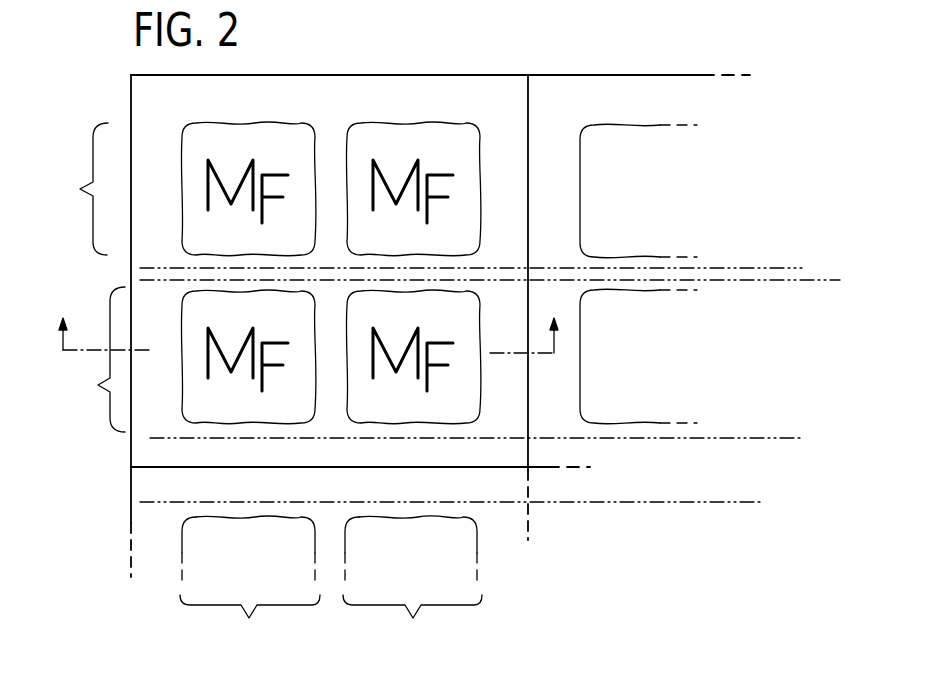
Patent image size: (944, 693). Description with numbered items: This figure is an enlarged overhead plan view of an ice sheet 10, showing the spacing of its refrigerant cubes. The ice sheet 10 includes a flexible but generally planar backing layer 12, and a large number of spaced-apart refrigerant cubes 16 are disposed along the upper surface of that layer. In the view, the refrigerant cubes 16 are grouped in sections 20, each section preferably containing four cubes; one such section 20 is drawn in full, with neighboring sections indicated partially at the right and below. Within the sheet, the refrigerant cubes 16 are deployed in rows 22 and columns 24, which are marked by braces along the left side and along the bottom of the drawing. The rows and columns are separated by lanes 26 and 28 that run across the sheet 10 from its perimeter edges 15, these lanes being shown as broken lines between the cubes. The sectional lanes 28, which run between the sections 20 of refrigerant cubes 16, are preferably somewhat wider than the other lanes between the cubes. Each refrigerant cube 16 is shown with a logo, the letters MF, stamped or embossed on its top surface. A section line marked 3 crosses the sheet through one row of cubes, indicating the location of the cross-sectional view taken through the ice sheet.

The ice sheet 10 is at (98, 488).
The backing layer 12 is at (580, 75).
The perimeter edges 15 is at (337, 75).
The refrigerant cubes 16 is at (274, 123).
The sections 20 is at (131, 108).
The rows 22 is at (86, 277).
The columns 24 is at (331, 620).
The lanes 26 is at (328, 145).
The sectional lanes 28 is at (566, 188).
The section line 3- 3 is at (308, 320).